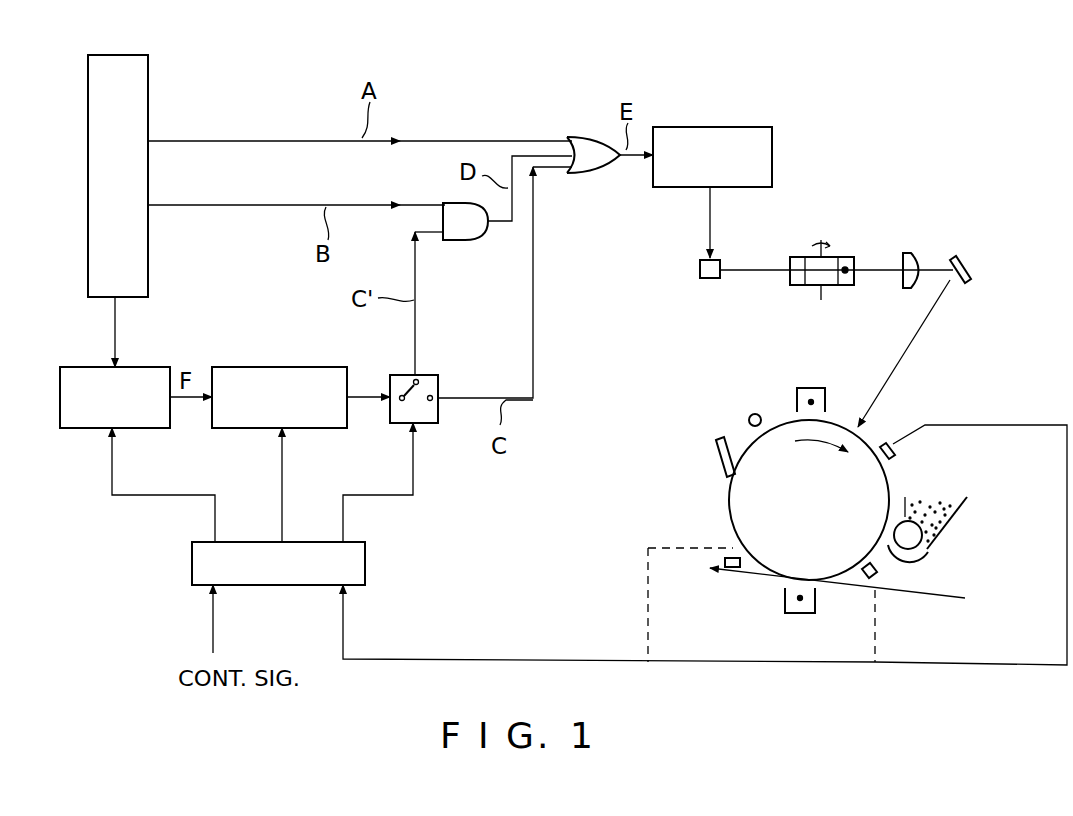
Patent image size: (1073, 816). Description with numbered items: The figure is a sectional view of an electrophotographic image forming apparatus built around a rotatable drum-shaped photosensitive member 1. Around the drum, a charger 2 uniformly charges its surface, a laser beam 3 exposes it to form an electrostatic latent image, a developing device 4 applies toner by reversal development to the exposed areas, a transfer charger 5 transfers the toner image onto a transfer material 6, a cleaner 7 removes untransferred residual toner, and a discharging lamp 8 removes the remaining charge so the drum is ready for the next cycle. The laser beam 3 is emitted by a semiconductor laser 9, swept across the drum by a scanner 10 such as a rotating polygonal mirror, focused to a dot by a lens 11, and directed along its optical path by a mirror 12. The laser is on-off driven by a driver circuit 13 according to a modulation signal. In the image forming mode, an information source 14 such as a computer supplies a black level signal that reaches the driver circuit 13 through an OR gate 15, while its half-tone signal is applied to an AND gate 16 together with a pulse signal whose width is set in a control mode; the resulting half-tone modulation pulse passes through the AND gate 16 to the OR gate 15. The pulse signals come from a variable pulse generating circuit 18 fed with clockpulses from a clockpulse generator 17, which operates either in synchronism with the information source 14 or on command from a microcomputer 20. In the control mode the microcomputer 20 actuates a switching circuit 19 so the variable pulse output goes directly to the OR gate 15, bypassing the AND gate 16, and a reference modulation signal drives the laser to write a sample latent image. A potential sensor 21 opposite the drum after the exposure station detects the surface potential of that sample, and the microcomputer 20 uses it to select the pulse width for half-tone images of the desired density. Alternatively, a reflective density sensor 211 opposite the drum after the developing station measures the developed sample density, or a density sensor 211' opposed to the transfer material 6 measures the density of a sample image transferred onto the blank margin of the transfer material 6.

The photosensitive member 1 is at (727, 510).
The charger 2 is at (813, 387).
The laser beam 3 is at (915, 345).
The developing device 4 is at (912, 540).
The transfer charger 5 is at (800, 614).
The transfer material 6 is at (900, 600).
The cleaner 7 is at (716, 455).
The discharging lamp 8 is at (753, 413).
The semiconductor laser 9 is at (709, 279).
The scanner 10 is at (795, 286).
The lens 11 is at (906, 290).
The mirror 12 is at (969, 284).
The driver circuit 13 is at (743, 126).
The information source 14 is at (148, 80).
The OR gate 15 is at (575, 134).
The AND gate 16 is at (470, 241).
The clockpulse generator 17 is at (140, 366).
The variable pulse generating circuit 18 is at (255, 366).
The switching circuit 19 is at (432, 374).
The microcomputer 20 is at (366, 565).
The potential sensor 21 is at (898, 440).
The reflective density sensor 211 is at (907, 578).
The density sensor 211' is at (731, 595).